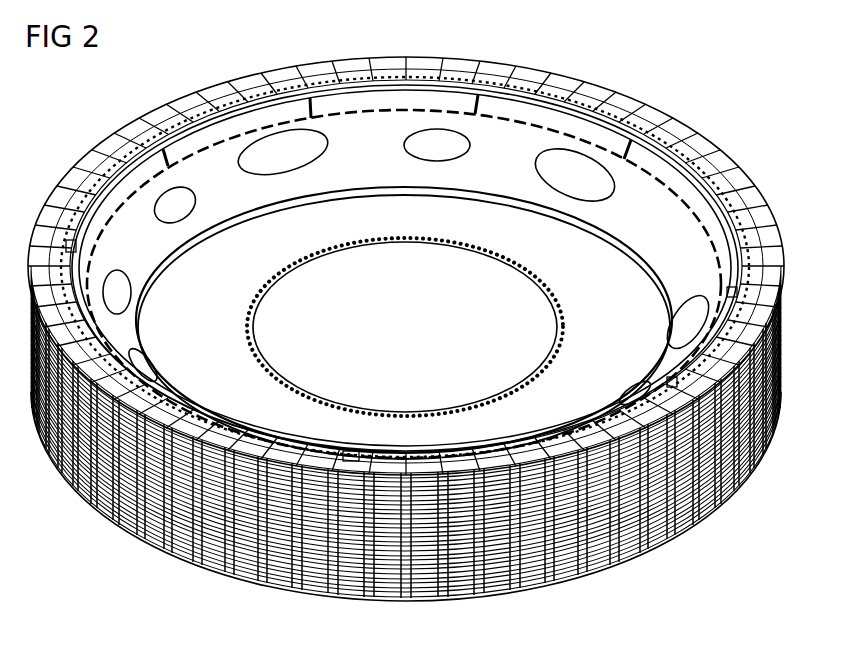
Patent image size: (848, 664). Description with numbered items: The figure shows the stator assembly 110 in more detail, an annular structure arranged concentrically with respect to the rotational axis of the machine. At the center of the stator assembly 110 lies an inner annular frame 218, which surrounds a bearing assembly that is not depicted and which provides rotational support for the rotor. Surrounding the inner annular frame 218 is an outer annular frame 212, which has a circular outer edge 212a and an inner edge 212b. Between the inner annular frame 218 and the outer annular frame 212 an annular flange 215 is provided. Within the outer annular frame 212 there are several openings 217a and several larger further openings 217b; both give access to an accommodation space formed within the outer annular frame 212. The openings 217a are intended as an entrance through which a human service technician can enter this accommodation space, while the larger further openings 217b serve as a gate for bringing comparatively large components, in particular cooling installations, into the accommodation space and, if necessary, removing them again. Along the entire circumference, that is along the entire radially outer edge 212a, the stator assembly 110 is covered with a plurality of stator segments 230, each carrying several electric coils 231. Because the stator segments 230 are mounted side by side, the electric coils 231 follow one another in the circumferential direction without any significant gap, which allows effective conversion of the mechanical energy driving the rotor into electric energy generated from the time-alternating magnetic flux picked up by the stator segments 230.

The stator assembly 110 is at (414, 312).
The outer annular frame 212 is at (401, 242).
The circular outer edge 212a is at (199, 140).
The inner edge 212b is at (600, 227).
The annular flange 215 is at (612, 232).
The openings 217a is at (450, 145).
The further openings 217b is at (303, 143).
The inner annular frame 218 is at (544, 380).
The stator segments 230 is at (738, 502).
The electric coils 231 is at (632, 100).